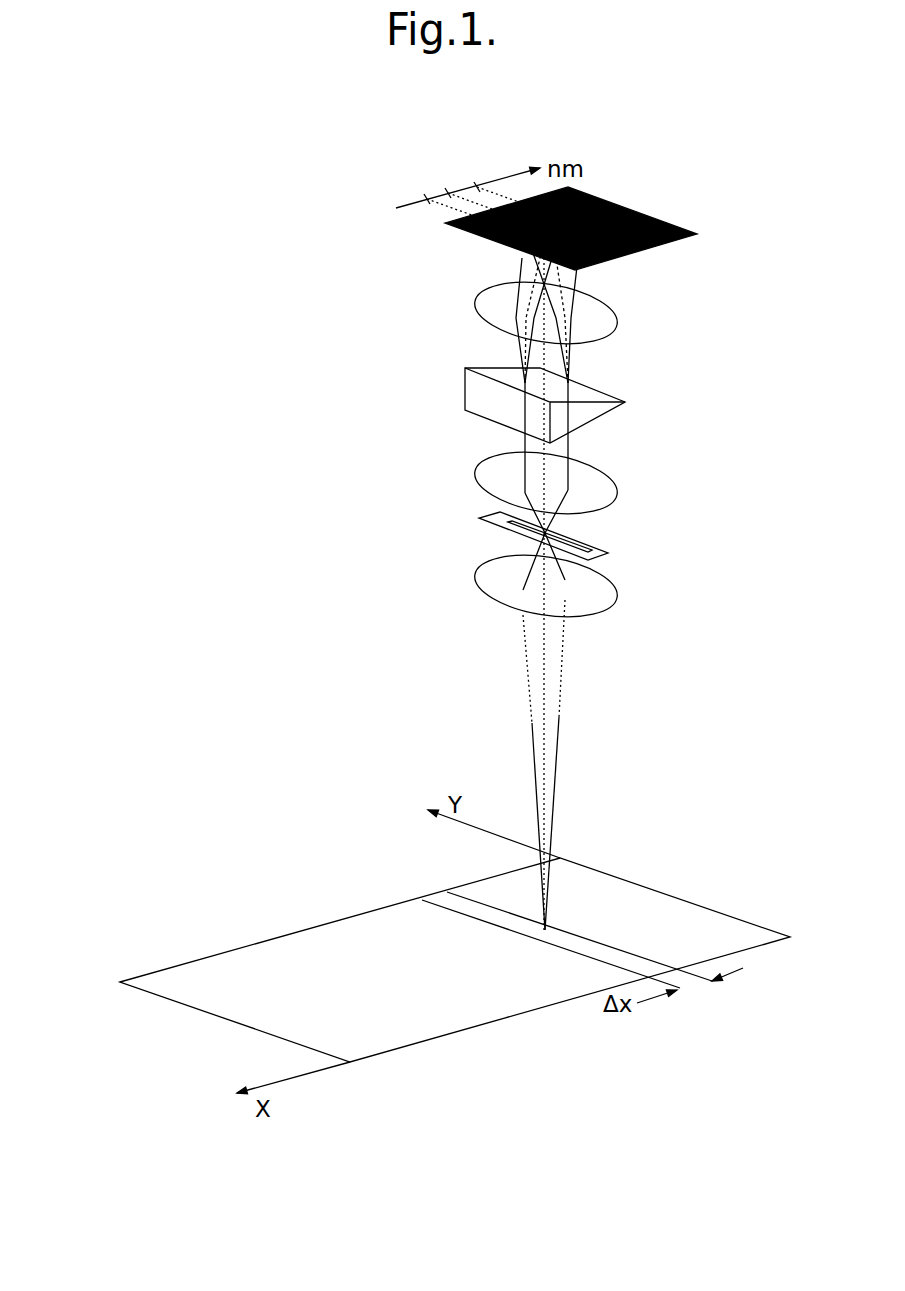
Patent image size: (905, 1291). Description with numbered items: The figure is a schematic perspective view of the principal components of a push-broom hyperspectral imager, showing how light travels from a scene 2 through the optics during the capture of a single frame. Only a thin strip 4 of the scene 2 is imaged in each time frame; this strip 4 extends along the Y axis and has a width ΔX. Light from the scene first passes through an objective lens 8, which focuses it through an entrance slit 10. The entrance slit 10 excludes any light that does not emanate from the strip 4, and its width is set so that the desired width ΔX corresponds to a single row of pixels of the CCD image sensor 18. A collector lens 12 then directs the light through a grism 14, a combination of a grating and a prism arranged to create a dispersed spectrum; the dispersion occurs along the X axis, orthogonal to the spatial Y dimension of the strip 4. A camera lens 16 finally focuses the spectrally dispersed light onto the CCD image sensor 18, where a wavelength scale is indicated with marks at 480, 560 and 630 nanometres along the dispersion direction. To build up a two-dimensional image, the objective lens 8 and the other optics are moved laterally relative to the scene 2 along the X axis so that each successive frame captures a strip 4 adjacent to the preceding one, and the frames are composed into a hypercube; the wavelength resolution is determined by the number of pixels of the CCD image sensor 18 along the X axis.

The scene 2 is at (430, 1020).
The strip 4 is at (613, 960).
The objective lens 8 is at (595, 600).
The entrance slit 10 is at (600, 548).
The collector lens 12 is at (598, 492).
The grism 14 is at (590, 397).
The camera lens 16 is at (598, 323).
The CCD image sensor 18 is at (623, 205).
The 480 nm wavelength position 480 is at (427, 199).
The 560 nm wavelength position 560 is at (448, 193).
The 630 nm wavelength position 630 is at (477, 187).